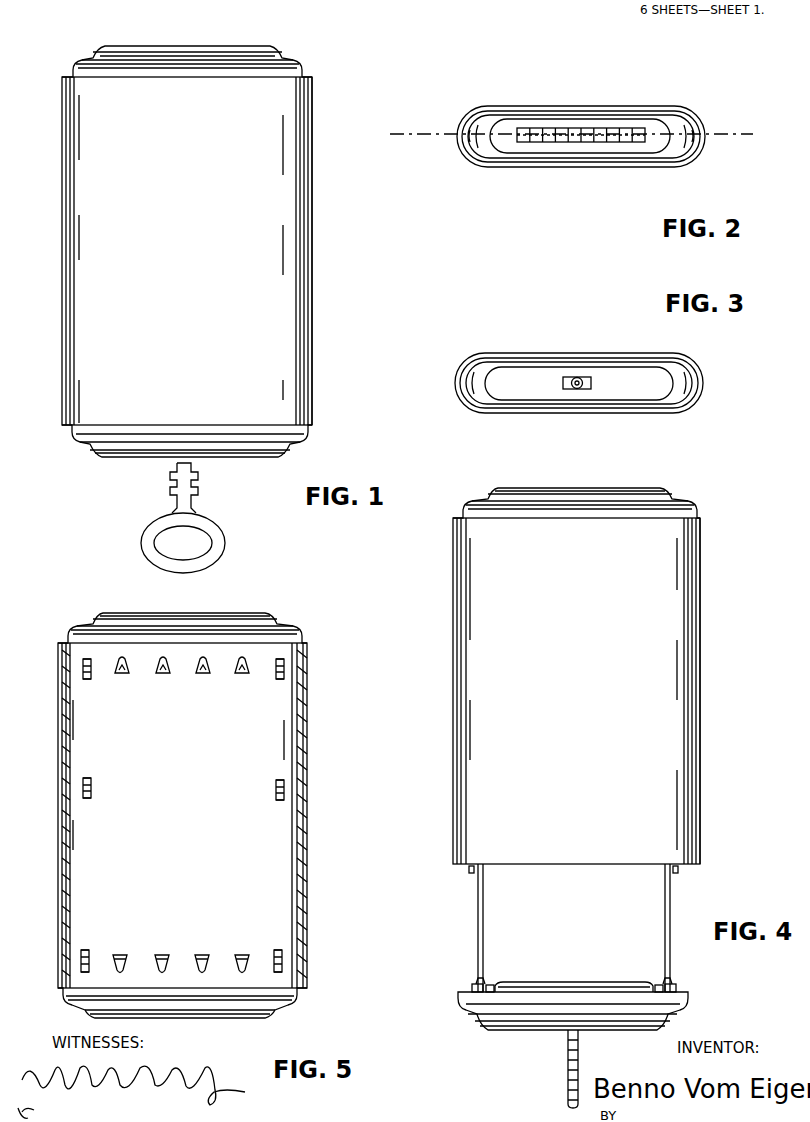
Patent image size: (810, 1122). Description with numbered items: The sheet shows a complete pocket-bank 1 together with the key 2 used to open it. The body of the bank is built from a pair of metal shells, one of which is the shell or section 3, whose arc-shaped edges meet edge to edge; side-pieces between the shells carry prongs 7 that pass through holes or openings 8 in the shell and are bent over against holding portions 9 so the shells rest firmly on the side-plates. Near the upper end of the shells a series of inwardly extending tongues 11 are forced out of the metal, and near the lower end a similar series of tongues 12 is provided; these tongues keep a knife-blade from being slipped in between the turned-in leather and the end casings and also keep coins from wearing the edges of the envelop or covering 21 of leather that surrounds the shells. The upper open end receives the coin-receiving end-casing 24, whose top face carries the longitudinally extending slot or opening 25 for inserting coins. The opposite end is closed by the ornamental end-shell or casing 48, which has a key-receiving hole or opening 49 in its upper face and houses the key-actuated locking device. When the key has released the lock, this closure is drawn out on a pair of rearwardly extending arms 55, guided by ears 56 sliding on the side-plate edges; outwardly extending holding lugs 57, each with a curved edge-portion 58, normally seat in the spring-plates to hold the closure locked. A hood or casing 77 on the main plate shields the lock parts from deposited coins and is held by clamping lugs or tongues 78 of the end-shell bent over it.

In FIG. 1, the pocket-bank 1 is at (213, 251).
In FIG. 2, the pocket-bank 1 is at (581, 157).
In FIG. 3, the pocket-bank 1 is at (579, 365).
In FIG. 4, the pocket-bank 1 is at (599, 691).
In FIG. 1, the key 2 is at (214, 533).
In FIG. 4, the key 2 is at (568, 1063).
In FIG. 5, the metal shell or section 3 is at (272, 724).
In FIG. 5, the prongs 7 is at (82, 662).
In FIG. 5, the holes or openings 8 is at (82, 669).
In FIG. 2, the holding portions 9 is at (577, 139).
In FIG. 5, the inwardly extending prong-shaped members or tongues 11 is at (160, 674).
In FIG. 5, the inwardly extending prong-shaped members or tongues 12 is at (165, 956).
In FIG. 1, the envelop or covering 21 is at (265, 215).
In FIG. 2, the envelop or covering 21 is at (650, 108).
In FIG. 3, the envelop or covering 21 is at (600, 353).
In FIG. 4, the envelop or covering 21 is at (660, 597).
In FIG. 5, the envelop or covering 21 is at (58, 838).
In FIG. 1, the coin-receiving end-casing or shell 24 is at (268, 58).
In FIG. 2, the coin-receiving end-casing or shell 24 is at (511, 125).
In FIG. 4, the coin-receiving end-casing or shell 24 is at (632, 495).
In FIG. 5, the coin-receiving end-casing or shell 24 is at (240, 622).
In FIG. 2, the slot or opening 25 is at (570, 131).
In FIG. 1, the ornamental end-shell or casing 48 is at (137, 448).
In FIG. 3, the ornamental end-shell or casing 48 is at (642, 389).
In FIG. 4, the ornamental end-shell or casing 48 is at (512, 1020).
In FIG. 5, the ornamental end-shell or casing 48 is at (228, 1018).
In FIG. 3, the key-receiving hole or opening 49 is at (583, 391).
In FIG. 4, the rearwardly extending arms 55 is at (486, 912).
In FIG. 4, the guiding-members or ears 56 is at (470, 871).
In FIG. 4, the holding lugs or projections 57 is at (477, 987).
In FIG. 4, the curved edge-portion 58 is at (472, 990).
In FIG. 4, the hood, shell or casing 77 is at (571, 983).
In FIG. 4, the clamping lugs or tongues 78 is at (492, 985).